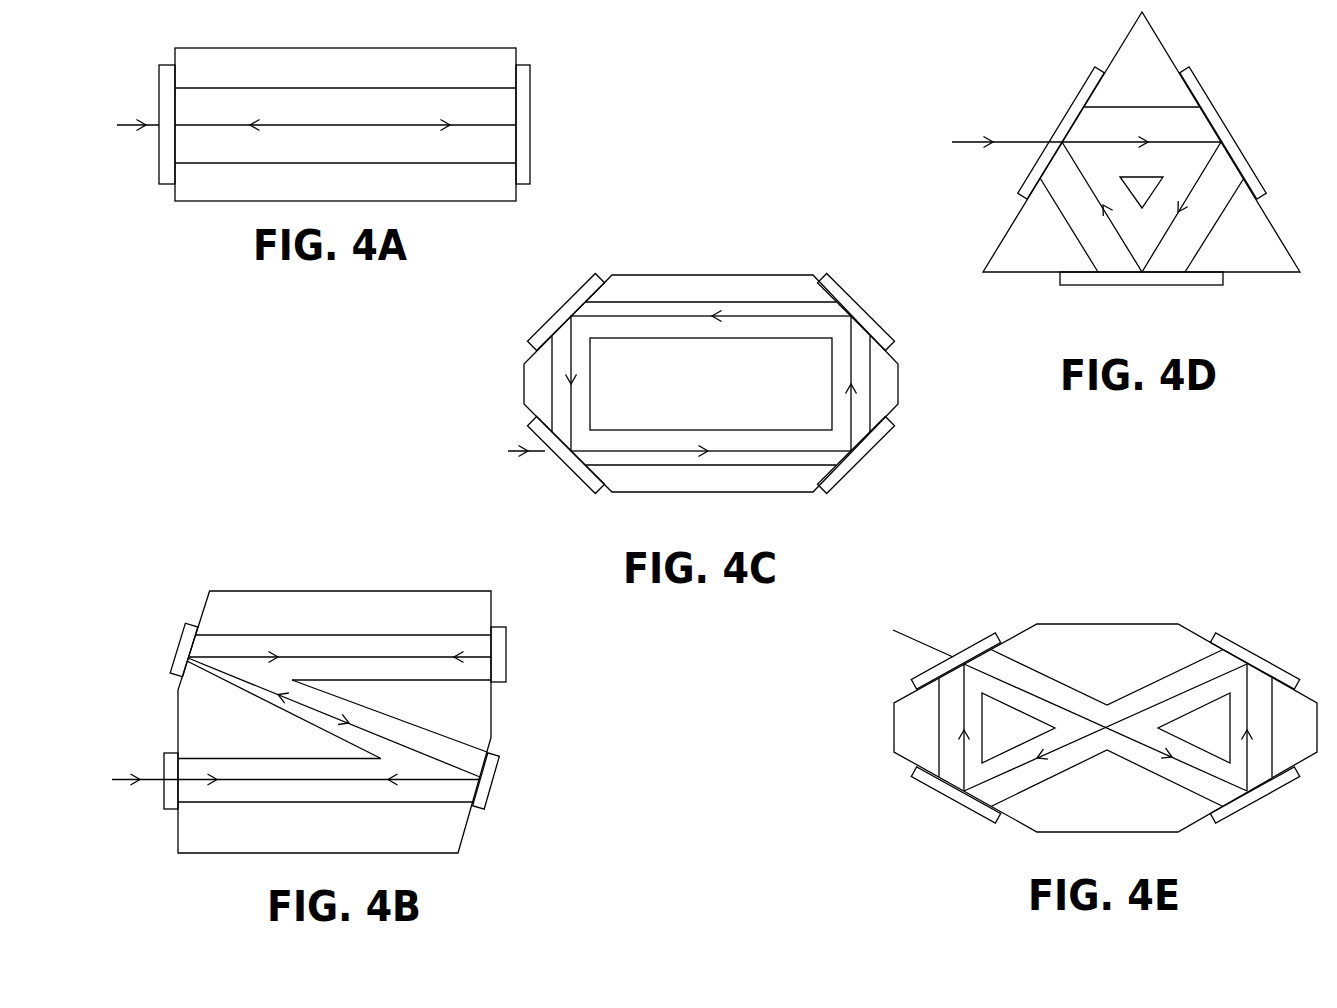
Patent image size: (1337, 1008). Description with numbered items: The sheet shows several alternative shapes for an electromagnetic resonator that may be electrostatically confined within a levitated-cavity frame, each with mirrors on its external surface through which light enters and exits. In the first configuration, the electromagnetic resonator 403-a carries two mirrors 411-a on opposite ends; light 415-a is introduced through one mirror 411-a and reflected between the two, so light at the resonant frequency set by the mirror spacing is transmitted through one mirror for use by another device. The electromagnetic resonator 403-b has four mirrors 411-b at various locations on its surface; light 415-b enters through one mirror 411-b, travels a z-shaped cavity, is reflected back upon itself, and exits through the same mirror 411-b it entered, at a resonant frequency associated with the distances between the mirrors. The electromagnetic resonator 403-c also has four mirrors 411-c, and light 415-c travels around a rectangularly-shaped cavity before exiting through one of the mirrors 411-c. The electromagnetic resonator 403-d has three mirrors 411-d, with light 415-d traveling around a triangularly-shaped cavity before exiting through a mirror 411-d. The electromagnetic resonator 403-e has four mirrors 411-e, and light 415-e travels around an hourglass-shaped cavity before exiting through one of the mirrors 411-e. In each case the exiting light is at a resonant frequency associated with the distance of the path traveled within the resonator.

In FIG. 4A, the electromagnetic resonator 403-a is at (377, 48).
In FIG. 4A, the mirrors 411-a is at (158, 93).
In FIG. 4A, the light 415-a is at (123, 126).
In FIG. 4B, the electromagnetic resonator 403-b is at (381, 591).
In FIG. 4B, the mirrors 411-b is at (174, 653).
In FIG. 4B, the light 415-b is at (126, 782).
In FIG. 4C, the electromagnetic resonator 403-c is at (737, 493).
In FIG. 4C, the mirrors 411-c is at (545, 322).
In FIG. 4C, the light 415-c is at (508, 452).
In FIG. 4D, the electromagnetic resonator 403-d is at (1020, 273).
In FIG. 4D, the mirrors 411-d is at (1067, 107).
In FIG. 4D, the light 415-d is at (967, 143).
In FIG. 4E, the electromagnetic resonator 403-e is at (1107, 623).
In FIG. 4E, the mirrors 411-e is at (958, 647).
In FIG. 4E, the light 415-e is at (898, 630).